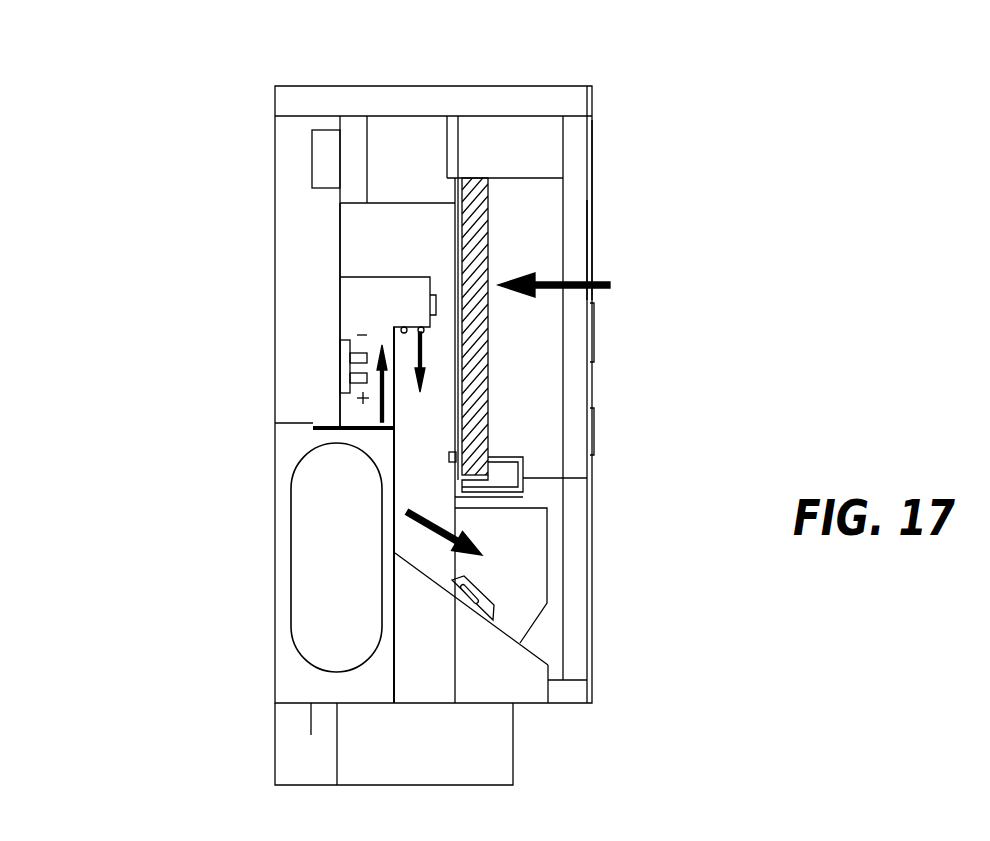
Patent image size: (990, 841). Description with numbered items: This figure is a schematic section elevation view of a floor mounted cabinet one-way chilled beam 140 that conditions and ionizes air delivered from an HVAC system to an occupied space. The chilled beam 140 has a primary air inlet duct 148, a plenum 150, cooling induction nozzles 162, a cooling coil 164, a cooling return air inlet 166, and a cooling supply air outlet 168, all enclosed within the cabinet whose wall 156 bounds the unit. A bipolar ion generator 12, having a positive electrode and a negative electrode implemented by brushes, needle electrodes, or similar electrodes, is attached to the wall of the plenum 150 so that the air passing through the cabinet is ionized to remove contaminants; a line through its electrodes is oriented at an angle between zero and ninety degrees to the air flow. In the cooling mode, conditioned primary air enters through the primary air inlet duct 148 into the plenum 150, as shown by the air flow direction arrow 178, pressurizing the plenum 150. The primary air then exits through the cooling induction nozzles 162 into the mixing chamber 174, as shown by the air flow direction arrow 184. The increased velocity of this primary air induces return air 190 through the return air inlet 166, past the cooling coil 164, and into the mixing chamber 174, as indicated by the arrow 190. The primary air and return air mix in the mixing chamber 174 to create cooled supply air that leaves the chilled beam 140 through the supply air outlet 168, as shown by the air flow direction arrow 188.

The cabinet one-way chilled beam 140 is at (676, 127).
The rear wall 156 is at (590, 193).
The cooling return air inlet 166 is at (592, 240).
The return air / air flow direction arrow 190 is at (605, 281).
The cooling coil 164 is at (505, 300).
The air flow direction arrow 184 is at (425, 348).
The mixing chamber 174 is at (447, 430).
The plenum 150 is at (355, 324).
The cooling induction nozzles 162 is at (405, 300).
The bipolar ion generator 12 is at (340, 363).
The air flow direction arrow 178 is at (380, 412).
The air flow direction arrow 188 is at (426, 523).
The primary air inlet duct 148 is at (291, 600).
The cooling supply air outlet 168 is at (550, 632).